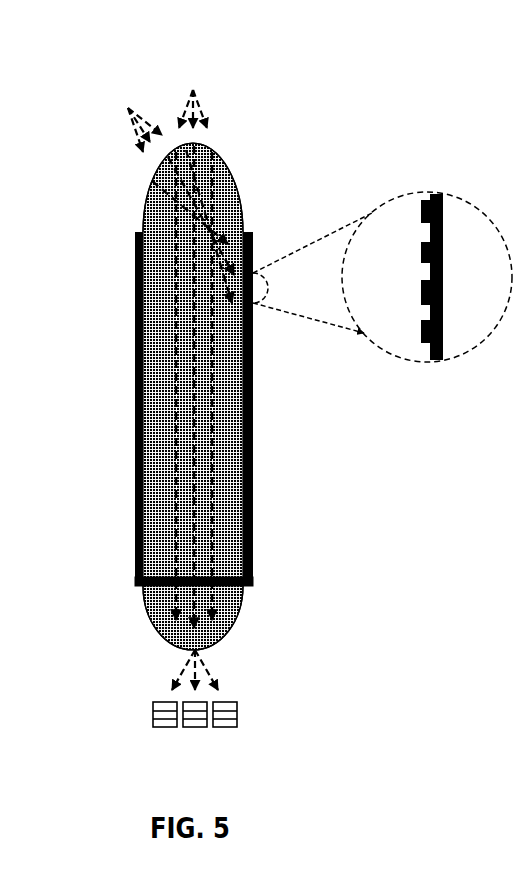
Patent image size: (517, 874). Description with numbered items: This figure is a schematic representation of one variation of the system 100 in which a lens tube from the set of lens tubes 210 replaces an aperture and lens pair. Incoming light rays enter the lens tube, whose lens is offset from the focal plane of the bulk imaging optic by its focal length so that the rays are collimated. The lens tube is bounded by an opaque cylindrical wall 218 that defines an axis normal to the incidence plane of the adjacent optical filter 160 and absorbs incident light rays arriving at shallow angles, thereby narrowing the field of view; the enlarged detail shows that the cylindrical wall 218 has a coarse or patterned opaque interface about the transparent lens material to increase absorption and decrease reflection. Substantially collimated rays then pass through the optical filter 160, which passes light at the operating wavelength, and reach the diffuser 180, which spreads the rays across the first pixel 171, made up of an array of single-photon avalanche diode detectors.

The optical sensing device 100 is at (100, 70).
The set of lens tubes 210 is at (223, 177).
The cylindrical wall 218 is at (253, 383).
The optical filter 160 is at (135, 583).
The diffuser 180 is at (232, 612).
The first pixel 171 is at (153, 713).